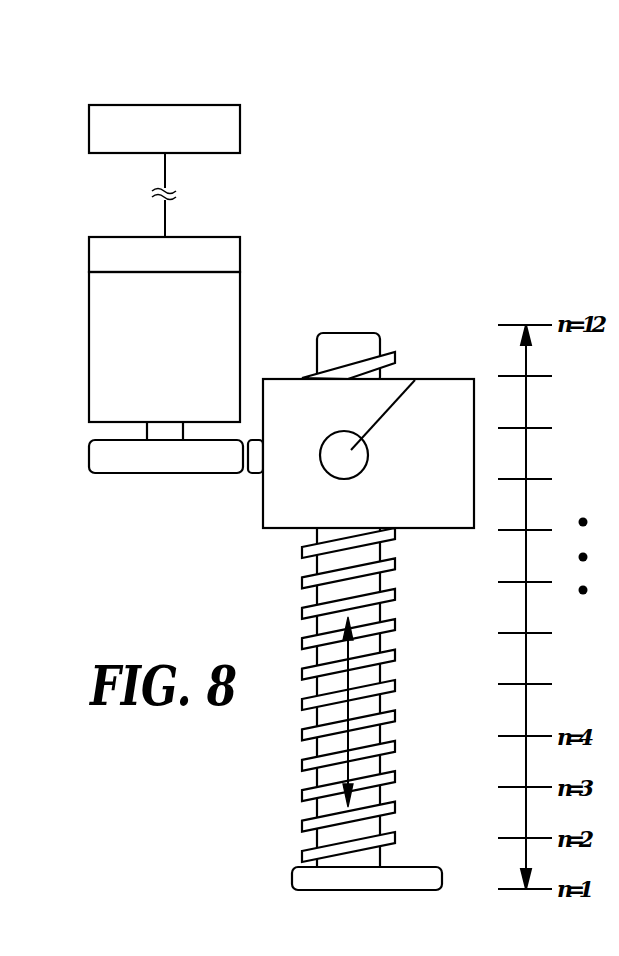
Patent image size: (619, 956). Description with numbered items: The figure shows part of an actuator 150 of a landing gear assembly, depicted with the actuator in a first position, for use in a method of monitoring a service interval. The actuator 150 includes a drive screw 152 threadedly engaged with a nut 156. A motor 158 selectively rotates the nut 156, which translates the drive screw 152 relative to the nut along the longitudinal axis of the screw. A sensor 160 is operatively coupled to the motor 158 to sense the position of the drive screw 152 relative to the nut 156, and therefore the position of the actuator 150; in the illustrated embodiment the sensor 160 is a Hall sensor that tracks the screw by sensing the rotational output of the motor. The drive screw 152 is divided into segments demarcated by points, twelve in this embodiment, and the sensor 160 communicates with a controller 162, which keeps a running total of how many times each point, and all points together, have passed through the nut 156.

The actuator 150 is at (389, 321).
The drive screw 152 is at (397, 742).
The nut 156 is at (433, 379).
The motor 158 is at (89, 338).
The sensor 160 is at (89, 246).
The controller 162 is at (89, 122).